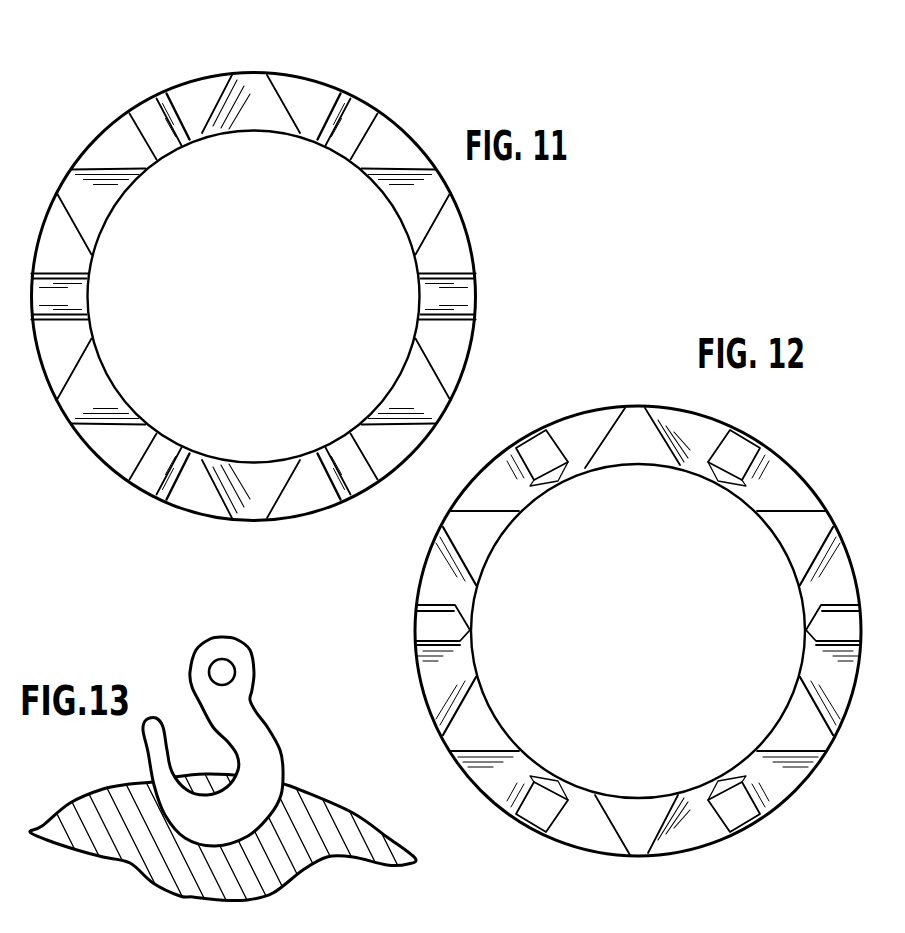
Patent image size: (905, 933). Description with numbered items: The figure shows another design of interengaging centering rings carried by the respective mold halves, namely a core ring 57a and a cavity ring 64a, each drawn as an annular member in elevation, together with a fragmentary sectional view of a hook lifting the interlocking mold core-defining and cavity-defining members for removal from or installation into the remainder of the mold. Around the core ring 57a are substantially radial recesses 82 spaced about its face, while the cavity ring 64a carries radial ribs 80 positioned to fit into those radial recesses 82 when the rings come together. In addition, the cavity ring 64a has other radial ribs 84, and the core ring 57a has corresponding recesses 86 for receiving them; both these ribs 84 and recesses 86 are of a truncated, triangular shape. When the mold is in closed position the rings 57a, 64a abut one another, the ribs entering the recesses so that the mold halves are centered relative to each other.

In FIG. 11, the core ring 57a is at (254, 268).
In FIG. 11, the recesses 86 is at (247, 93).
In FIG. 11, the radial recesses 82 is at (352, 118).
In FIG. 12, the cavity ring 64a is at (638, 584).
In FIG. 12, the radial ribs 84 is at (631, 432).
In FIG. 12, the radial ribs 80 is at (738, 450).